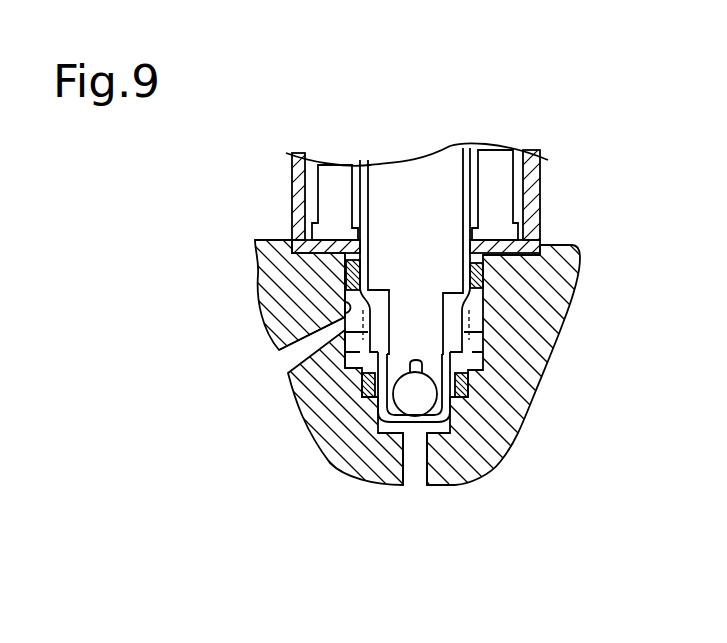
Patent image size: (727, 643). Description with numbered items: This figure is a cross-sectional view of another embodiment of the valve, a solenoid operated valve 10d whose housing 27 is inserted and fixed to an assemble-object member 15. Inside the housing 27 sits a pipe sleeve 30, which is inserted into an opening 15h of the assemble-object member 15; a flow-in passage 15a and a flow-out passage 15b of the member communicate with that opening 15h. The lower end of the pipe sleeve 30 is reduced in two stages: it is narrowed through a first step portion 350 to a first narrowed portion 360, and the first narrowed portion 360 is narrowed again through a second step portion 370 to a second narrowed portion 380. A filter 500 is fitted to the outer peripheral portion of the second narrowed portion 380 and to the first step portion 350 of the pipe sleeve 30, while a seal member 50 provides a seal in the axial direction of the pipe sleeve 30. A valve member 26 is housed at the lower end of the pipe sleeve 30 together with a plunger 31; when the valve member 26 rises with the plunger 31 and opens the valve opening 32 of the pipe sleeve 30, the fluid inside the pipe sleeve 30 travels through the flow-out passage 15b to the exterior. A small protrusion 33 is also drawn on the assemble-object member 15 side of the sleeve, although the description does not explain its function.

The solenoid operated valve 10d is at (526, 100).
The assemble-object member 15 is at (510, 417).
The flow-in passage 15a is at (303, 352).
The flow-out passage 15b is at (408, 476).
The opening 15h is at (345, 263).
The valve member 26 is at (400, 437).
The housing 27 is at (540, 178).
The pipe sleeve 30 is at (465, 148).
The plunger 31 is at (390, 190).
The valve opening 32 is at (415, 422).
The protrusion 33 is at (347, 313).
The seal member 50 is at (346, 268).
The first step portion 350 is at (483, 298).
The first narrowed portion 360 is at (475, 327).
The second step portion 370 is at (364, 378).
The second narrowed portion 380 is at (410, 397).
The filter 500 is at (478, 356).